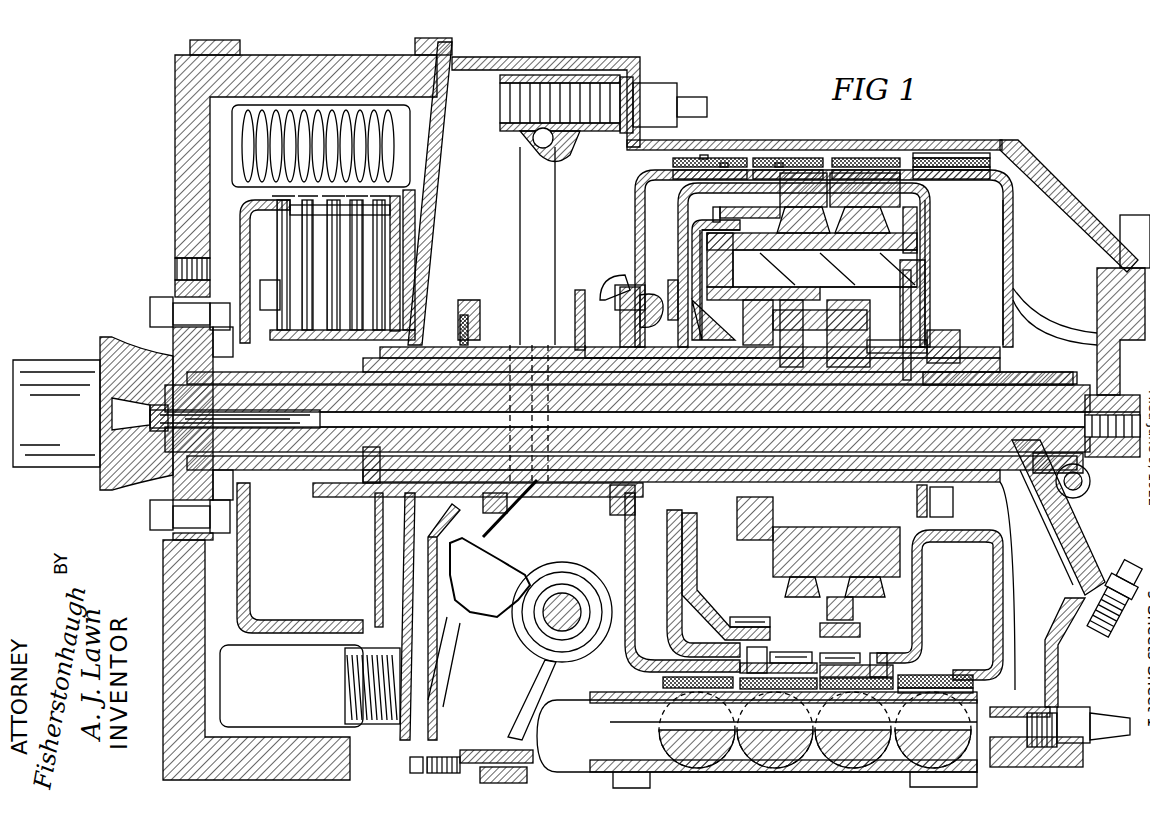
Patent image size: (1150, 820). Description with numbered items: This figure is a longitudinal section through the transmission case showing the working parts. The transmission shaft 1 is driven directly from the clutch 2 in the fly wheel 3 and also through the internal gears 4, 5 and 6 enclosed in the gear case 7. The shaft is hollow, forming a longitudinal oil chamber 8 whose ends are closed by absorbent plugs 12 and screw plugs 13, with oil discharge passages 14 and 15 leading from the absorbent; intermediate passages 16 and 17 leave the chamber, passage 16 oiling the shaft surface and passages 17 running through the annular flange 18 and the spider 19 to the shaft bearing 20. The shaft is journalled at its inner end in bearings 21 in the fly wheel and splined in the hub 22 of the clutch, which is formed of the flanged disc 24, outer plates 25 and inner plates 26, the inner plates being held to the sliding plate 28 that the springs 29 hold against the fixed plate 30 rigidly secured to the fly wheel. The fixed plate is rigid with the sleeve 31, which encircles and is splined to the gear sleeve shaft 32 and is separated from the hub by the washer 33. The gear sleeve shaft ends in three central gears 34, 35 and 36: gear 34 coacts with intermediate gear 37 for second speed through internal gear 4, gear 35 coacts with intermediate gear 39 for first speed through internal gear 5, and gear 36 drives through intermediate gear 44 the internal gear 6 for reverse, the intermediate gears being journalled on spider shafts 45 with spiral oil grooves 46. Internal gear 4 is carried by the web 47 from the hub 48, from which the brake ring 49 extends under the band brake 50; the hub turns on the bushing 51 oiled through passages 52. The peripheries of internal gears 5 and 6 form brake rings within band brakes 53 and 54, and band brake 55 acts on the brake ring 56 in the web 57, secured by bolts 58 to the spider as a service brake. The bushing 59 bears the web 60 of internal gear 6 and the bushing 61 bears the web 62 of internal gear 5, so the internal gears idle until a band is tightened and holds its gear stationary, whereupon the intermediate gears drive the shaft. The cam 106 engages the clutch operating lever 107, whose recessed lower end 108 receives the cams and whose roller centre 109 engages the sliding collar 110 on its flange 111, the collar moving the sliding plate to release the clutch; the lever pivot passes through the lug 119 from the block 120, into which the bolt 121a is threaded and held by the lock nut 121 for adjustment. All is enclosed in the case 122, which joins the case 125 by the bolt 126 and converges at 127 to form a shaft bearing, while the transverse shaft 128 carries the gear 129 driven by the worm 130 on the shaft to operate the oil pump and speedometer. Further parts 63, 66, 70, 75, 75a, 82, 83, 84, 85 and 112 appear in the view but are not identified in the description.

The transmission shaft 1 is at (520, 348).
The clutch 2 is at (285, 235).
The fly wheel 3 is at (175, 125).
The internal gear 4 is at (745, 170).
The internal gear 5 is at (800, 172).
The internal gear 6 is at (860, 172).
The gear case 7 is at (920, 141).
The longitudinal oil chamber 8 is at (565, 488).
The absorbent plugs 12 is at (262, 432).
The screw plugs 13 is at (150, 360).
The oil discharge passage 14 is at (1120, 400).
The oil discharge passage 15 is at (290, 470).
The oil discharge passage 16 is at (595, 358).
The oil discharge passages 17 is at (990, 375).
The annular flange 18 is at (880, 338).
The spider 19 is at (930, 285).
The shaft bearing 20 is at (935, 272).
The bearings 21 is at (125, 486).
The hub 22 is at (280, 378).
The flanged disc 24 is at (275, 250).
The outer plates 25 is at (250, 200).
The inner plates 26 is at (398, 220).
The sliding plate 28 is at (410, 245).
The springs 29 is at (410, 135).
The fixed plate 30 is at (415, 268).
The sleeve 31 is at (555, 348).
The gear sleeve shaft 32 is at (580, 300).
The washer 33 is at (608, 290).
The central gear 34 is at (760, 530).
The central gear 35 is at (773, 560).
The central gear 36 is at (800, 570).
The intermediate gear 37 is at (635, 210).
The intermediate gear 39 is at (815, 200).
The intermediate gear 44 is at (860, 630).
The spider shafts 45 is at (870, 250).
The spiral oil grooves 46 is at (900, 270).
The web 47 is at (690, 232).
The hub 48 is at (668, 296).
The brake ring 49 is at (705, 158).
The band brake 50 is at (725, 165).
The bushing 51 is at (625, 285).
The passages 52 is at (600, 482).
The band brake 53 is at (780, 165).
The band brake 54 is at (870, 165).
The band brake 55 is at (945, 158).
The brake ring 56 is at (960, 170).
The web 57 is at (1015, 220).
The bolts 58 is at (925, 305).
The bushing 59 is at (1000, 295).
The web 60 is at (930, 228).
The bushing 61 is at (650, 330).
The web 62 is at (686, 205).
The roller 63 is at (762, 762).
The rail 66 is at (575, 760).
The rail end 70 is at (541, 730).
The friction lining 75 is at (663, 682).
The friction lining 75a is at (673, 163).
The roller 82 is at (692, 762).
The roller 83 is at (786, 762).
The lever arm 84 is at (532, 690).
The roller 85 is at (926, 762).
The cam 106 is at (515, 570).
The clutch operating lever 107 is at (520, 232).
The recessed lower end 108 is at (490, 610).
The roller centre 109 is at (545, 498).
The sliding collar 110 is at (470, 315).
The flange 111 is at (500, 298).
The bolt 112 is at (953, 500).
The lug 119 is at (535, 150).
The block 120 is at (640, 72).
The lock nut 121 is at (660, 88).
The bolt 121a is at (626, 85).
The case 122 is at (520, 57).
The case 125 is at (450, 80).
The bolt 126 is at (410, 765).
The converging end 127 is at (1045, 362).
The transverse shaft 128 is at (1092, 487).
The gear 129 is at (1080, 496).
The worm 130 is at (1075, 395).